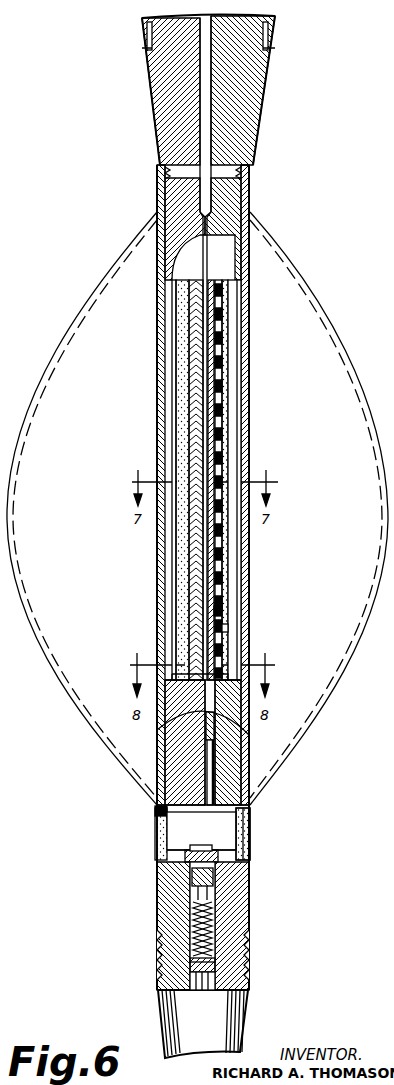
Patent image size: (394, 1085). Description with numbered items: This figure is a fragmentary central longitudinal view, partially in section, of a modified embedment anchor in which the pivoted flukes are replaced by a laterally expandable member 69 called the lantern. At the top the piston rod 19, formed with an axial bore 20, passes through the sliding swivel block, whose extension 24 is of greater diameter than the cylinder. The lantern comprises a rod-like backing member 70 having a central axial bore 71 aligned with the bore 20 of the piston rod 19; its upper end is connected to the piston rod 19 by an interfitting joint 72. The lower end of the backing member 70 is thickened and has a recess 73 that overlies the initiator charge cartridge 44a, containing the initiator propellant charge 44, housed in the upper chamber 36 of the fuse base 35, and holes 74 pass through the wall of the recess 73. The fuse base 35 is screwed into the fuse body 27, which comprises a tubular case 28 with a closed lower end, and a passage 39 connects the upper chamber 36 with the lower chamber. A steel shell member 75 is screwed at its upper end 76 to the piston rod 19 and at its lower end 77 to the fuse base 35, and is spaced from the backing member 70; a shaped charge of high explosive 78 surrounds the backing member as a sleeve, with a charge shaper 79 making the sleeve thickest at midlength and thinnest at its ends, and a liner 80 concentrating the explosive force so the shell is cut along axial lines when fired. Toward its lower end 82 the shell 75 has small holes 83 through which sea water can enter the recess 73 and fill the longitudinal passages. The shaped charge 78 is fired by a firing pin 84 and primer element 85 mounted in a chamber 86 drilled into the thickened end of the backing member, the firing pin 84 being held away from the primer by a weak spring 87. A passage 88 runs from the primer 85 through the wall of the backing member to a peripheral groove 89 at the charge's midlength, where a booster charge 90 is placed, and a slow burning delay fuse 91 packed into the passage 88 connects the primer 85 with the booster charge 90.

The piston rod 19 is at (240, 62).
The axial bore 20 is at (204, 68).
The extension 24 is at (268, 44).
The fuse body 27 is at (248, 1035).
The tubular case 28 is at (243, 958).
The fuse base 35 is at (160, 895).
The upper chamber 36 is at (229, 905).
The passage 39 is at (167, 990).
The initiator propellant charge 44 is at (180, 922).
The cartridge 44a is at (180, 947).
The laterally expandable member 69 is at (249, 407).
The backing member 70 is at (186, 342).
The central axial bore 71 is at (200, 371).
The interfitting joint 72 is at (224, 234).
The recess 73 is at (158, 812).
The holes 74 is at (226, 831).
The shell member 75 is at (88, 318).
The upper end 76 is at (255, 192).
The lower end 77 is at (160, 870).
The shaped charge of high explosive 78 is at (229, 372).
The charge shaper 79 is at (235, 331).
The liner 80 is at (232, 350).
The lower end 82 is at (244, 840).
The small holes 83 is at (156, 830).
The firing pin 84 is at (228, 750).
The primer element 85 is at (222, 712).
The chamber 86 is at (160, 738).
The weak spring 87 is at (225, 738).
The passage 88 is at (219, 612).
The peripheral groove 89 is at (214, 462).
The booster charge 90 is at (238, 500).
The slow burning delay fuse 91 is at (224, 629).